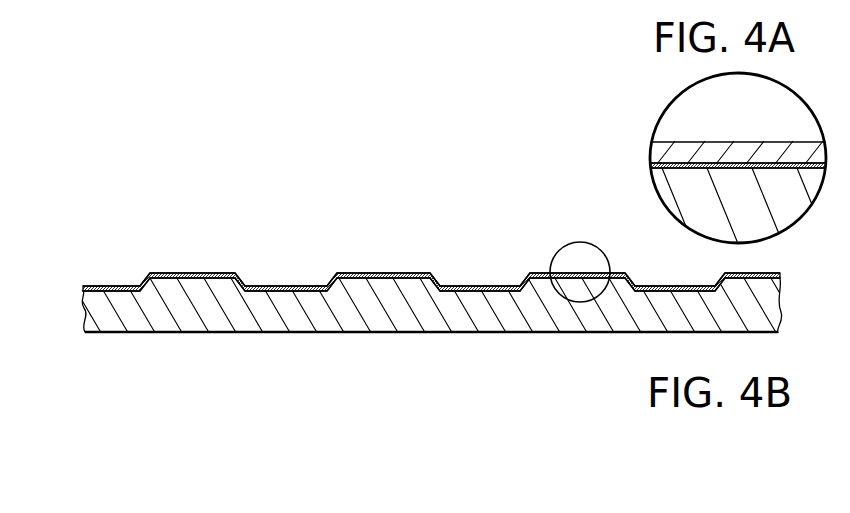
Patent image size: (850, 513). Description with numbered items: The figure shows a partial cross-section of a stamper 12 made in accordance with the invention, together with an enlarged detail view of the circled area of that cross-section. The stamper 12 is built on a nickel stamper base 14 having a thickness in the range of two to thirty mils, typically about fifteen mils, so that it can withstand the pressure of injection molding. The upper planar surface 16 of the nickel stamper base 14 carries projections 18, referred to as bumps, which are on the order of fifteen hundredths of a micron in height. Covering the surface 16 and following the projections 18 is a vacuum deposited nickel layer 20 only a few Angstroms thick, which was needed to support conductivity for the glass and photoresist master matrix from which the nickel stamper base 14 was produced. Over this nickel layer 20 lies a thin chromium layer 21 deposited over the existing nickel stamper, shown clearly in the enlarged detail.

In FIG. 4B, the stamper 12 is at (298, 332).
In FIG. 4A, the nickel stamper base 14 is at (723, 210).
In FIG. 4B, the nickel stamper base 14 is at (470, 307).
In FIG. 4B, the upper planar surface 16 is at (272, 285).
In FIG. 4B, the projections 18 is at (174, 273).
In FIG. 4A, the vacuum deposited nickel layer 20 is at (690, 166).
In FIG. 4B, the vacuum deposited nickel layer 20 is at (496, 294).
In FIG. 4A, the chromium layer 21 is at (662, 151).
In FIG. 4B, the chromium layer 21 is at (447, 286).